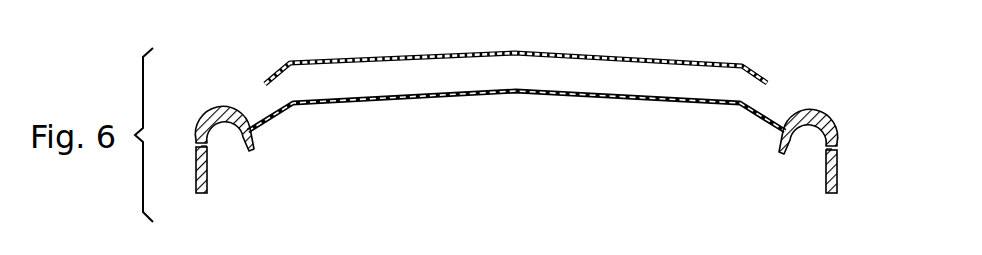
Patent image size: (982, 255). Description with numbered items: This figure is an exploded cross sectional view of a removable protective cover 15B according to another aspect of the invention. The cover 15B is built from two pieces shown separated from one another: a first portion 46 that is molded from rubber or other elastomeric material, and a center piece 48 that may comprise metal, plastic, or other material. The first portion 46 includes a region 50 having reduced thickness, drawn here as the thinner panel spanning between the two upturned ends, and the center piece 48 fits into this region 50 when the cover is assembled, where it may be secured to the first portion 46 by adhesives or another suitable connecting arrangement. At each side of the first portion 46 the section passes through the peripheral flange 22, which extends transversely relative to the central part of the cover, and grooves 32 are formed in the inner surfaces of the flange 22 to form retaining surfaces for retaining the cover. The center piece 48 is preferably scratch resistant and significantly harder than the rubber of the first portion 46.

The cover 15B is at (863, 72).
The peripheral flange 22 is at (195, 164).
The grooves 32 is at (205, 148).
The first portion 46 is at (840, 127).
The center piece 48 is at (757, 65).
The region having reduced thickness 50 is at (760, 104).